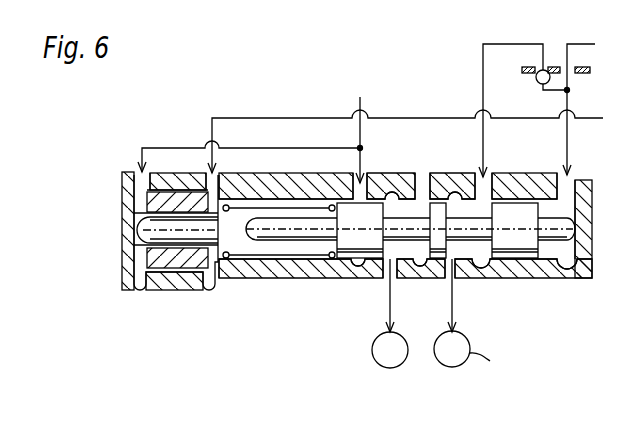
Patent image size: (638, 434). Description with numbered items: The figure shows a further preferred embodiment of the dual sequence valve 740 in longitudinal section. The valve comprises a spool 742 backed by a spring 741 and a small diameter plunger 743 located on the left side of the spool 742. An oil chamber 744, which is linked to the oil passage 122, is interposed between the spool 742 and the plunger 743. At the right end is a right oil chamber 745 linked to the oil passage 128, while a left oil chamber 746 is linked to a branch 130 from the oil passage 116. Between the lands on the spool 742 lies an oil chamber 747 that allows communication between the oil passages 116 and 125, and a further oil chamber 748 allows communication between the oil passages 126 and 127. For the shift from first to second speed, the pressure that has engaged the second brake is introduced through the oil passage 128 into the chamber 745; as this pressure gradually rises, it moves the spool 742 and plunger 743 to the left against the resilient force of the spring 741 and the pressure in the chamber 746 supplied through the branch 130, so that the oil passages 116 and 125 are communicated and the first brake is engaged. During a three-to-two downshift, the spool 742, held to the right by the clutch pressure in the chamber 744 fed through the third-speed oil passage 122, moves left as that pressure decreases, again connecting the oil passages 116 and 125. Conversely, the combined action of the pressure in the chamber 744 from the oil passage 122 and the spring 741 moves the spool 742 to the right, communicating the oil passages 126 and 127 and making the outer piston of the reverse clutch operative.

The oil passage 116 is at (361, 147).
The oil passage 122 is at (259, 118).
The oil passage 126 is at (484, 148).
The oil passage 128 is at (568, 148).
The branch 130 is at (143, 148).
The oil passage 125 is at (386, 308).
The oil passage 127 is at (449, 308).
The dual sequence valve 740 is at (124, 250).
The spring 741 is at (300, 206).
The spool 742 is at (410, 258).
The small diameter plunger 743 is at (188, 237).
The oil chamber 744 is at (248, 250).
The right oil chamber 745 is at (563, 247).
The left oil chamber 746 is at (137, 230).
The oil chamber 747 is at (402, 250).
The oil chamber 748 is at (463, 252).